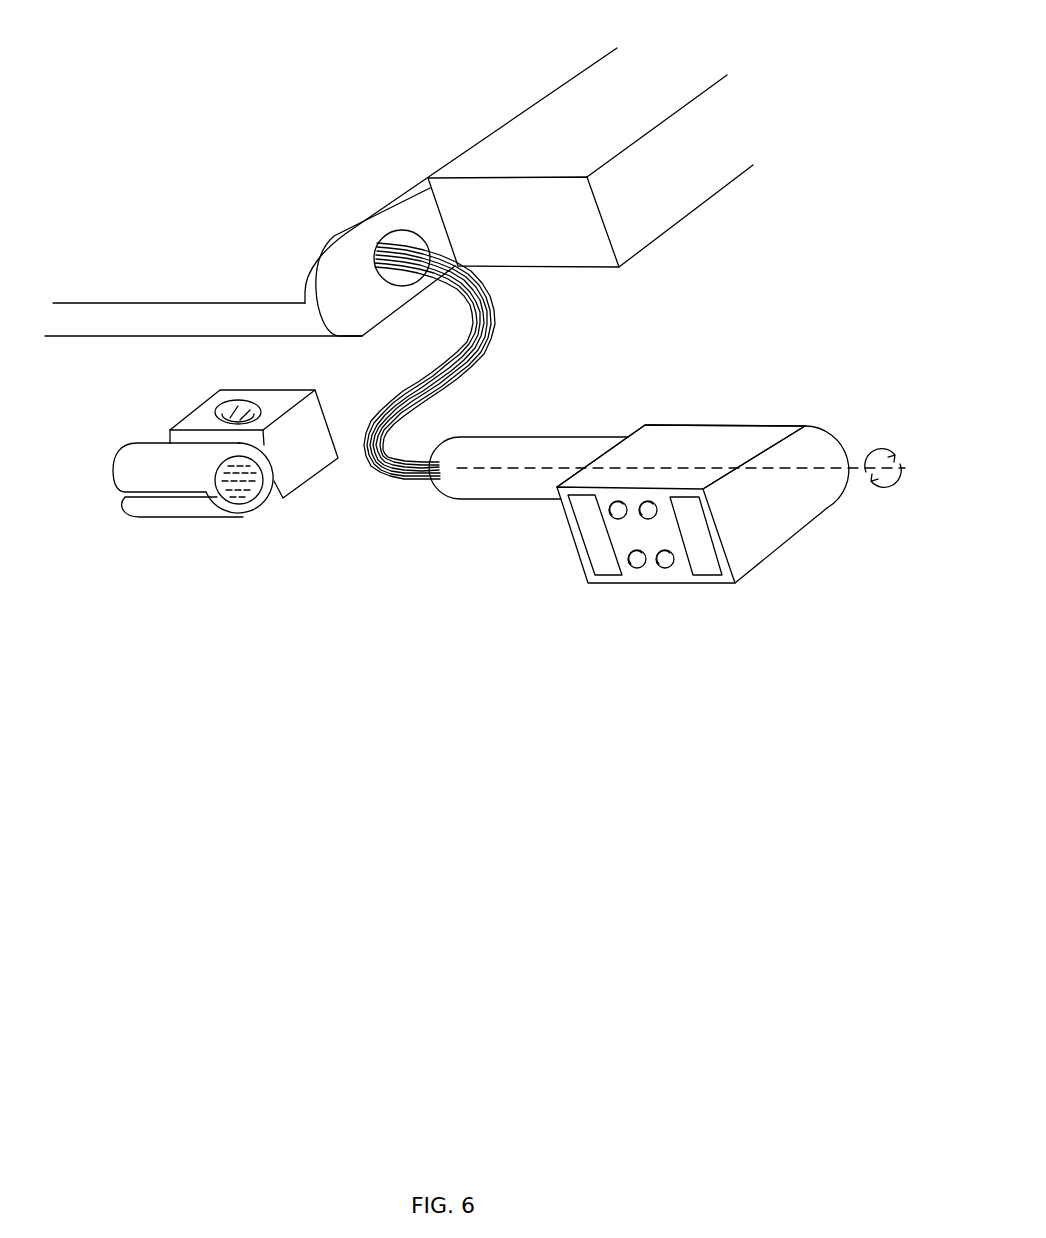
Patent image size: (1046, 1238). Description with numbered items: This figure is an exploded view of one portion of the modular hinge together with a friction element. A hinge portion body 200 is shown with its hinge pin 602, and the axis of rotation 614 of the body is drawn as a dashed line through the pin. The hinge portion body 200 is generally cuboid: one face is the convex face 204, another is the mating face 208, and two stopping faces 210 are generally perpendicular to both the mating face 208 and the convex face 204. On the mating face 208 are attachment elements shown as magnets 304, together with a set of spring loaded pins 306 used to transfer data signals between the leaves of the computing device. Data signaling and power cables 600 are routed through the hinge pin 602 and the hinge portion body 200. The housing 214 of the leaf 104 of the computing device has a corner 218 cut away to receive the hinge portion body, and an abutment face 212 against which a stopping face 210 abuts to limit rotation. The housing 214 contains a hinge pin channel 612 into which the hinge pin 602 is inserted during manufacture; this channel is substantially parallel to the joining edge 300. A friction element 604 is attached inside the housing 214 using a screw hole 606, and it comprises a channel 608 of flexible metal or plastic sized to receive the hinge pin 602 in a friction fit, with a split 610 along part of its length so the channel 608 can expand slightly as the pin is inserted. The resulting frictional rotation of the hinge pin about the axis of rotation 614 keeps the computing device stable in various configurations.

The leaf 104 is at (278, 252).
The joining edge 300 is at (92, 318).
The hinge portion body 200 is at (790, 528).
The convex face 204 is at (847, 498).
The mating face 208 is at (680, 565).
The stopping face 210 is at (733, 437).
The abutment face 212 is at (547, 190).
The housing 214 is at (677, 198).
The corner 218 is at (497, 177).
The magnets 304 is at (602, 553).
The spring loaded pins 306 is at (662, 567).
The data signaling and power cables 600 is at (493, 333).
The hinge pin 602 is at (560, 448).
The friction element 604 is at (300, 470).
The screw hole 606 is at (247, 408).
The channel 608 is at (235, 513).
The split 610 is at (155, 493).
The hinge pin channel 612 is at (405, 237).
The axis of rotation 614 is at (818, 467).